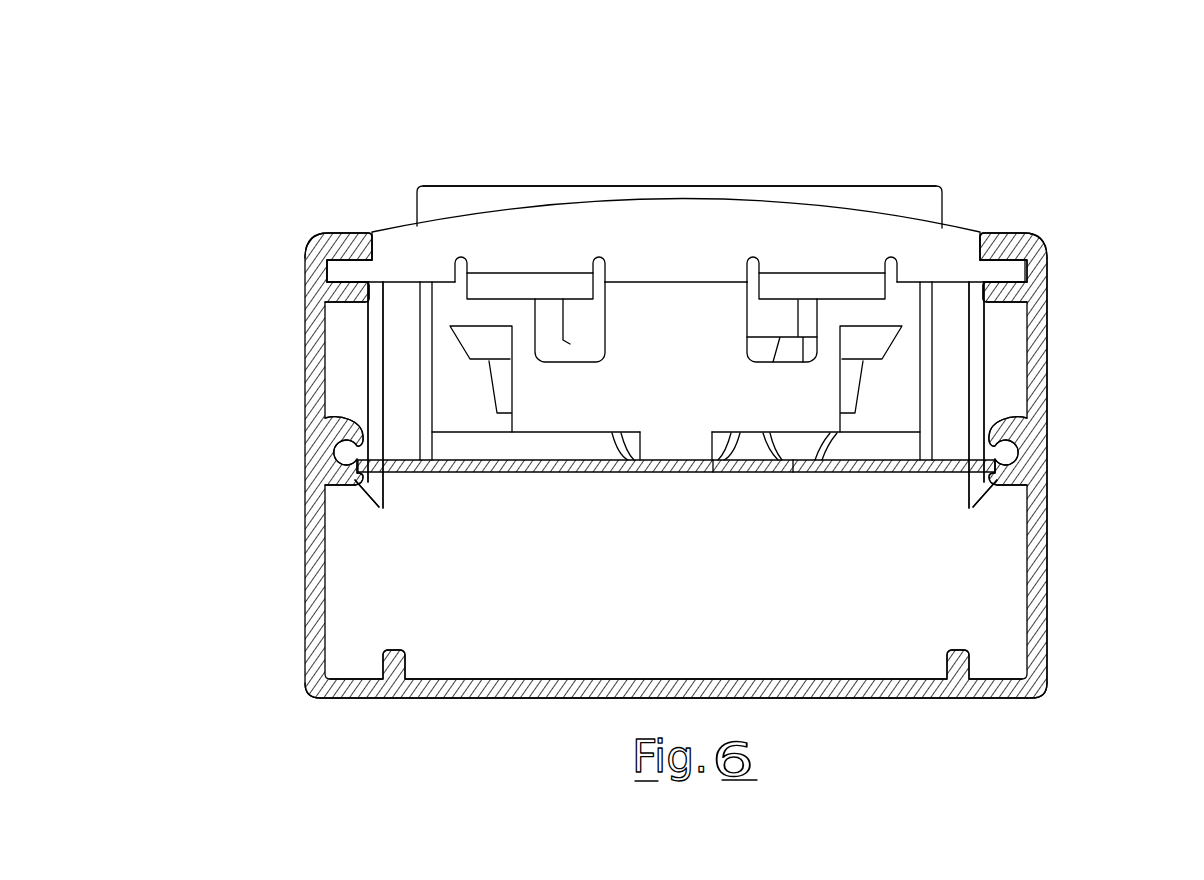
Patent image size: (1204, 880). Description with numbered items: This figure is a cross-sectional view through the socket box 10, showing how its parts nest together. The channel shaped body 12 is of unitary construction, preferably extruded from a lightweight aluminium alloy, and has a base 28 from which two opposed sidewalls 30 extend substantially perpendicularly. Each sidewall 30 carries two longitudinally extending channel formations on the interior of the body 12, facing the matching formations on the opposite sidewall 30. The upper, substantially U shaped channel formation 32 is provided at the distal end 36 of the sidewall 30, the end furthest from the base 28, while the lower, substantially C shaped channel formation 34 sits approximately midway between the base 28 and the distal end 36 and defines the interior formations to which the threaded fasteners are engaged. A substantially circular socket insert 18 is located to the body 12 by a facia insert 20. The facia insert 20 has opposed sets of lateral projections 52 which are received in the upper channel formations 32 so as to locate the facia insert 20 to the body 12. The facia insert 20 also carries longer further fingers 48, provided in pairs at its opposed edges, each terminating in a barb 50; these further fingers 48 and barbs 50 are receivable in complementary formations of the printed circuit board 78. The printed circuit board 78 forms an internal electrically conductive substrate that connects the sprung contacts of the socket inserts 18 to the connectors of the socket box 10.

The socket box 10 is at (789, 150).
The channel shaped body 12 is at (1150, 375).
The socket insert 18 is at (919, 202).
The facia insert 20 is at (395, 243).
The base 28 is at (600, 678).
The sidewall 30 is at (303, 537).
The upper channel formation 32 is at (333, 262).
The lower channel formation 34 is at (333, 448).
The distal end 36 is at (343, 233).
The further finger 48 is at (382, 503).
The barb 50 is at (676, 395).
The lateral projection 52 is at (353, 270).
The printed circuit board 78 is at (621, 478).